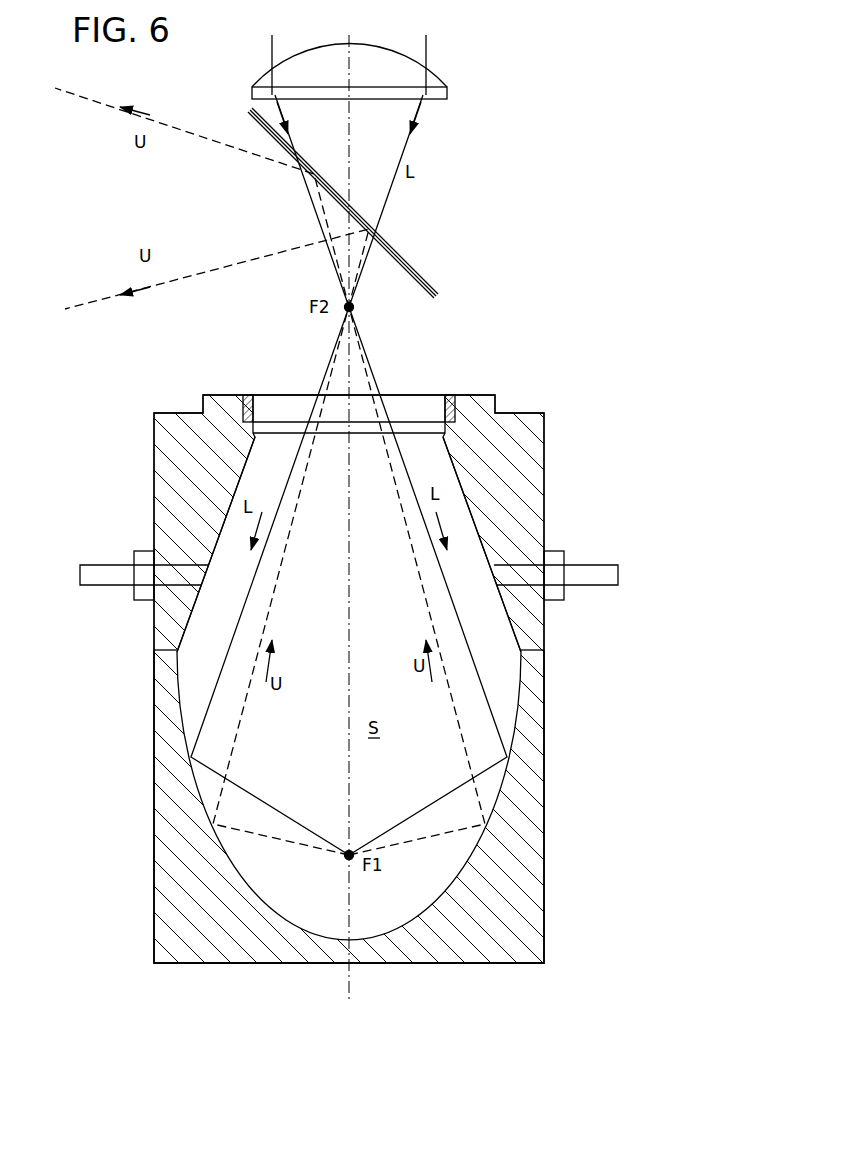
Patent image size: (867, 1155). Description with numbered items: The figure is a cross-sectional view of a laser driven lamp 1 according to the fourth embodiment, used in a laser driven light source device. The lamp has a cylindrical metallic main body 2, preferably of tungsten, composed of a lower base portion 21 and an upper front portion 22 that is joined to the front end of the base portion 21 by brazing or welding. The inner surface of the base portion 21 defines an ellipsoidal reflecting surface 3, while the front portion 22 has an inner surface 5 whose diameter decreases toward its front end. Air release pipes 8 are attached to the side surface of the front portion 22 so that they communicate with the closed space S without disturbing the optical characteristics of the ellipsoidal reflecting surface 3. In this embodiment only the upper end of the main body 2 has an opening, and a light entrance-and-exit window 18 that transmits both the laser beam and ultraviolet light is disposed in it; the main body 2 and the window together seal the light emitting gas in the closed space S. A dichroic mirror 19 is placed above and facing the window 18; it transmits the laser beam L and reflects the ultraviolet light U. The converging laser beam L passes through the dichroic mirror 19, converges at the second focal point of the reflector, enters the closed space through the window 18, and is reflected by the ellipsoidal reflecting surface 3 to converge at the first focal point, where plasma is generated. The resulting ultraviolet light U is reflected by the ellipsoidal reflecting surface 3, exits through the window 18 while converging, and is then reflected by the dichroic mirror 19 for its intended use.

The laser driven lamp 1 is at (158, 368).
The main body 2 is at (57, 628).
The ellipsoidal reflecting surface 3 is at (241, 873).
The inner surface 5 is at (240, 460).
The air release pipes 8 is at (116, 565).
The light entrance-and-exit window 18 is at (415, 397).
The dichroic mirror 19 is at (400, 255).
The base portion 21 is at (170, 700).
The front portion 22 is at (168, 620).